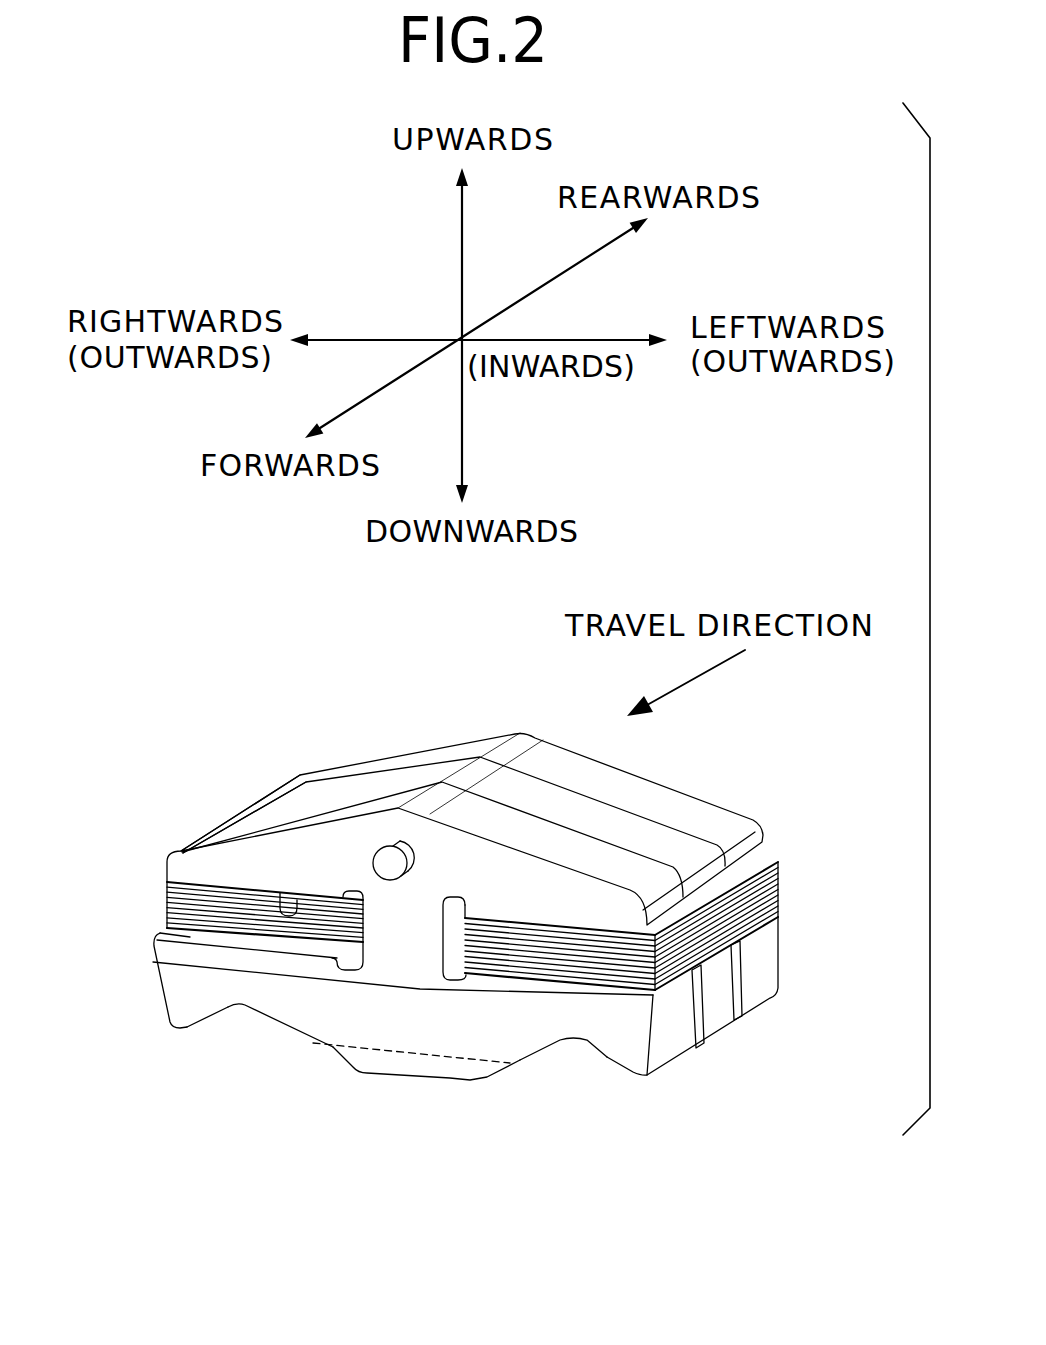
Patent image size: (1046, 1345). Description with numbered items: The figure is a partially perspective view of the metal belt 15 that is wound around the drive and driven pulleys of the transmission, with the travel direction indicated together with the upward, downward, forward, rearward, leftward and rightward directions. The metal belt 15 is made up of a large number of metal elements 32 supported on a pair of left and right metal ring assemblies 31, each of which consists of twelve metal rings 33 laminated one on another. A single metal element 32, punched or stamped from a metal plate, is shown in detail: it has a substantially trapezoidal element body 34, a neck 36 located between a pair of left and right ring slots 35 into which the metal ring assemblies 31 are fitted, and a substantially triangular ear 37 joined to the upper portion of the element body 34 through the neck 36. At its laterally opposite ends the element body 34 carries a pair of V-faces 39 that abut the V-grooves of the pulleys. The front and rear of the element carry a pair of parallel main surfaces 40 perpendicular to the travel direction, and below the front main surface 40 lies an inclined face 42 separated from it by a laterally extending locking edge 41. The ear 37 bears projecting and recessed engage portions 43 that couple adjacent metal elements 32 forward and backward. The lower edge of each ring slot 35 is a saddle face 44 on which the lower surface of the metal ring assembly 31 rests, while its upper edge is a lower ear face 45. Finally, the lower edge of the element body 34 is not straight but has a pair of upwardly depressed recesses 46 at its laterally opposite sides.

The metal belt 15 is at (472, 707).
The metal ring assembly 31 is at (752, 865).
The metal element 32 is at (452, 1104).
The metal ring 33 is at (168, 890).
The element body 34 is at (193, 1003).
The ring slot 35 is at (305, 958).
The neck 36 is at (412, 965).
The ear 37 is at (263, 863).
The V-face 39 is at (673, 1037).
The main surface 40 is at (421, 937).
The locking edge 41 is at (317, 980).
The inclined face 42 is at (413, 1029).
The engage portion 43 is at (390, 863).
The saddle face 44 is at (187, 935).
The lower ear face 45 is at (283, 912).
The recess 46 is at (240, 1010).